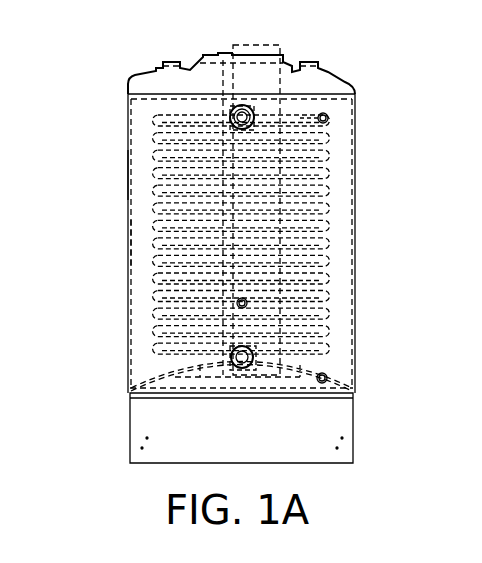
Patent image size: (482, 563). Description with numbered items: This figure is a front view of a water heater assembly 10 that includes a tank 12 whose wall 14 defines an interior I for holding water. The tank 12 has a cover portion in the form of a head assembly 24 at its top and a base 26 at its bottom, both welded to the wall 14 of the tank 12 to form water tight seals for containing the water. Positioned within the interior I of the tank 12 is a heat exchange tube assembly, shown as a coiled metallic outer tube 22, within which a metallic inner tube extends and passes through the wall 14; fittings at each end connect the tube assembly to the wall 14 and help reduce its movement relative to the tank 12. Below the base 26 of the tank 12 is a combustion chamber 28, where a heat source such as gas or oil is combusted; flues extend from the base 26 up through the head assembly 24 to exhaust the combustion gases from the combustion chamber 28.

The water heater assembly 10 is at (140, 63).
The tank 12 is at (140, 172).
The wall 14 is at (128, 248).
The interior I is at (140, 316).
The outer tube 22 is at (238, 118).
The head assembly 24 is at (328, 88).
The base 26 is at (302, 376).
The combustion chamber 28 is at (163, 423).